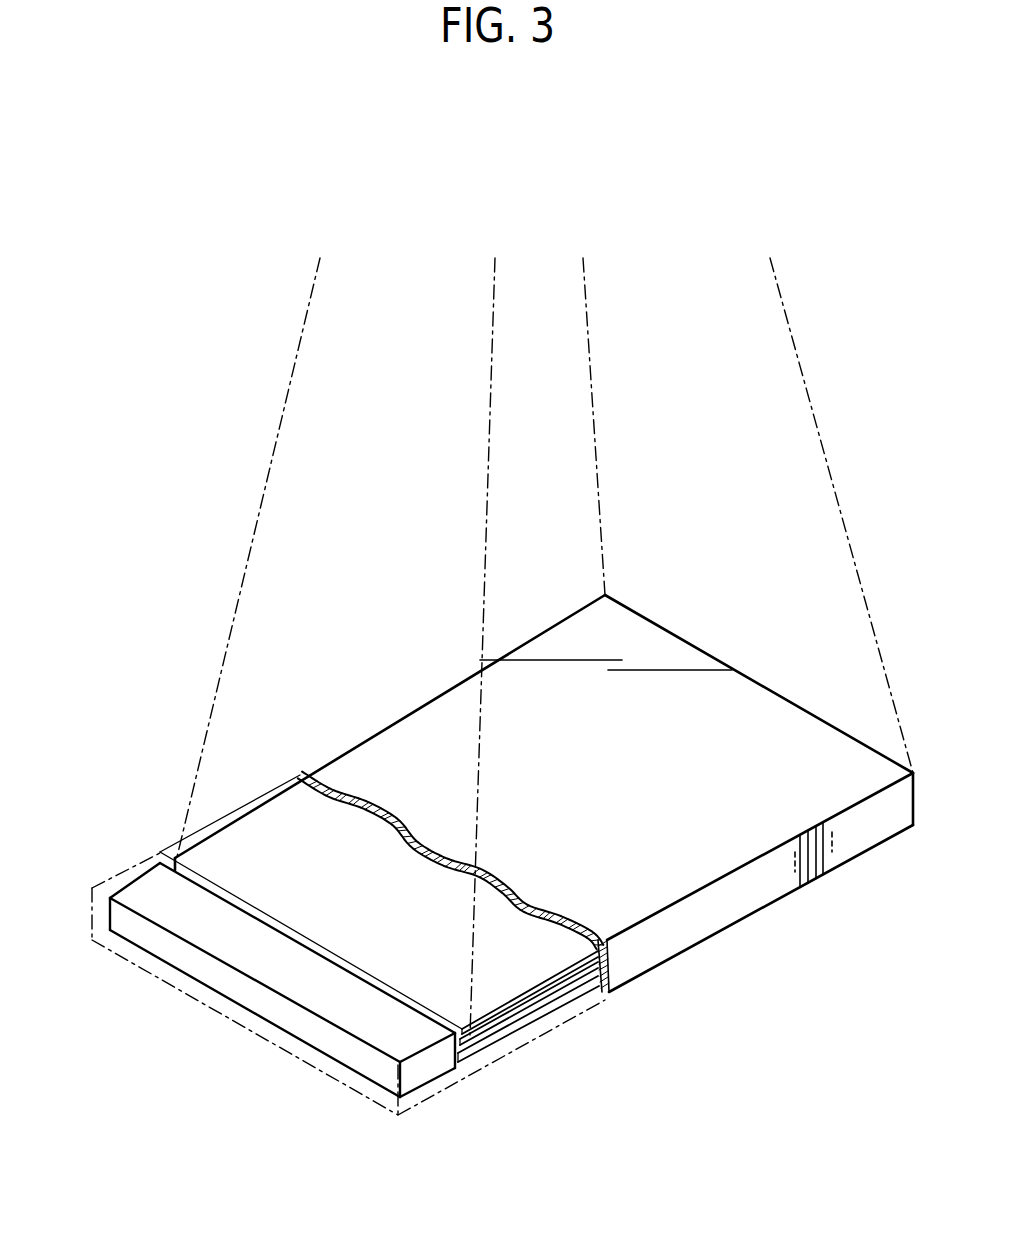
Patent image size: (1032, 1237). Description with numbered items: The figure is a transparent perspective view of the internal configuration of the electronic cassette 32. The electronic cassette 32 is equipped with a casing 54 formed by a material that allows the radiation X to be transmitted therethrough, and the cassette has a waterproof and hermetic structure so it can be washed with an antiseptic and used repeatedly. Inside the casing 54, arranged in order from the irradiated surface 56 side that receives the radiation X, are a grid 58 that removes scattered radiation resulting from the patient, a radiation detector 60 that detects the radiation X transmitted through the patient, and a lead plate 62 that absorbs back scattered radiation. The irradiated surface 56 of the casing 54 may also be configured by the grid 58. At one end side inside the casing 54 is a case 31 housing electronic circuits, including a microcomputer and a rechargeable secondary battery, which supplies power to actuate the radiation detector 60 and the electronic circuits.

The radiation X is at (262, 512).
The case 31 is at (193, 920).
The electronic cassette 32 is at (536, 843).
The casing 54 is at (713, 915).
The irradiated surface 56 is at (728, 682).
The grid 58 is at (538, 928).
The radiation detector 60 is at (581, 992).
The lead plate 62 is at (535, 1030).